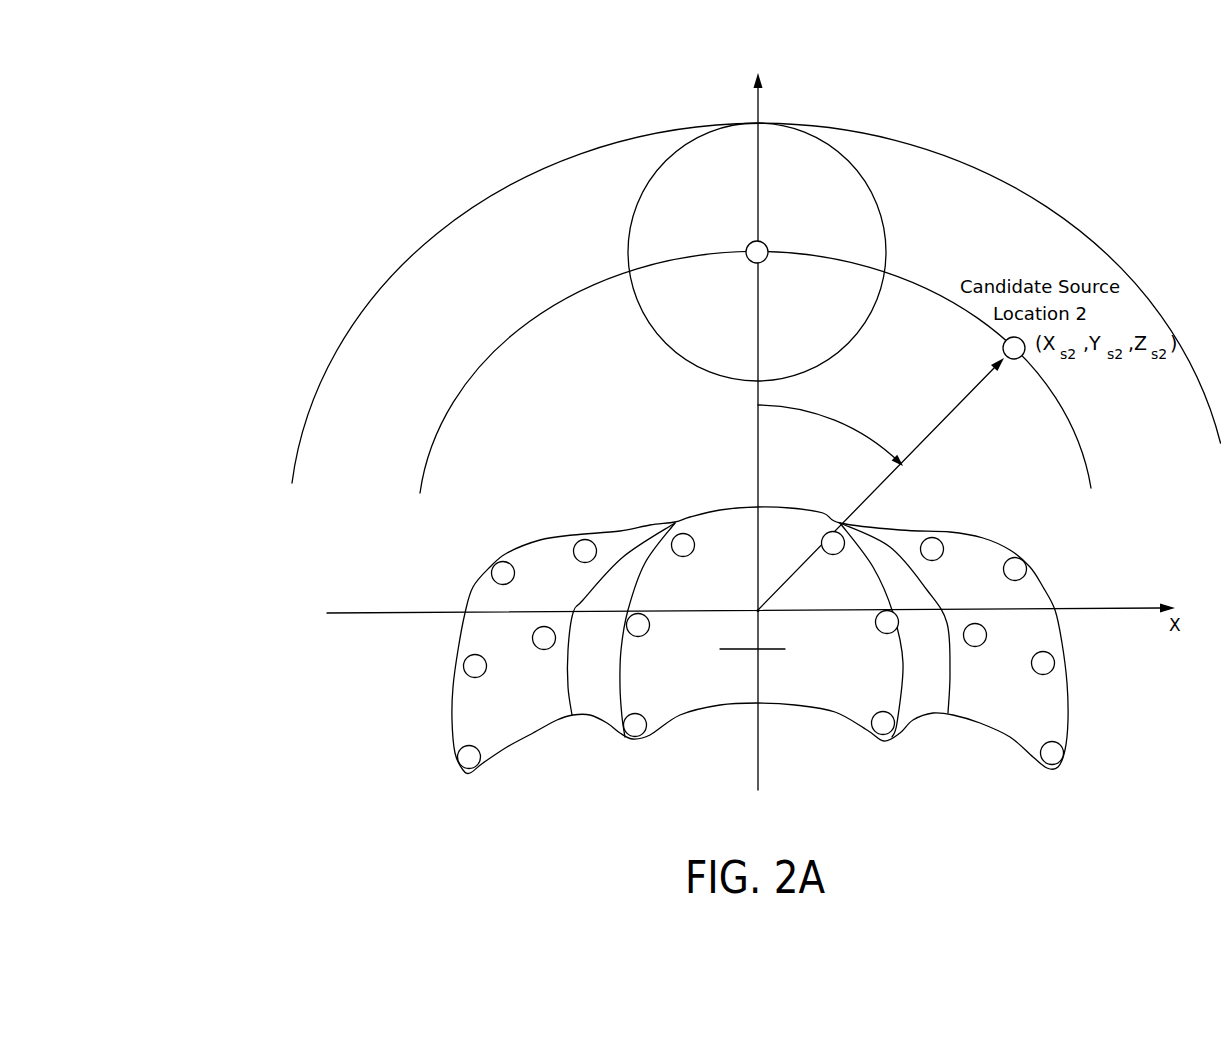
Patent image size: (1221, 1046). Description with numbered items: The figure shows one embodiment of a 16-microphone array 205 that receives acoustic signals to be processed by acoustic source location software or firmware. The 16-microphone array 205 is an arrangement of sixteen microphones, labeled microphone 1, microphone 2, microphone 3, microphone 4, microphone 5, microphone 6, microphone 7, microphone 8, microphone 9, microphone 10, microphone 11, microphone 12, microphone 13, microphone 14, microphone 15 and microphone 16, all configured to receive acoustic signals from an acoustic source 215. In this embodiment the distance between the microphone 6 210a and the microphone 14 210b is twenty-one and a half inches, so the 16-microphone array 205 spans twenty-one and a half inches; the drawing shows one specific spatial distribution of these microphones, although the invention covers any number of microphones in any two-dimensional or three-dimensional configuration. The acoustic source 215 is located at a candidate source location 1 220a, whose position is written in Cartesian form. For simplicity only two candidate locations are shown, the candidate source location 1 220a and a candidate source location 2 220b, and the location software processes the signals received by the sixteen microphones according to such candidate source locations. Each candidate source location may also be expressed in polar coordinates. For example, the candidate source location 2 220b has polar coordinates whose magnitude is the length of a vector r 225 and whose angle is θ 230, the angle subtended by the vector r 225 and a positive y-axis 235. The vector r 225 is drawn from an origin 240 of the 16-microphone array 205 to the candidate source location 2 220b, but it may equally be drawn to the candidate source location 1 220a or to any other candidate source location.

The 16-microphone array 205 is at (1037, 572).
The microphone 6 210a is at (1033, 660).
The microphone 14 210b is at (502, 641).
The acoustic source 215 is at (767, 250).
The candidate source location 1 220a is at (690, 297).
The candidate source location 2 220b is at (1143, 367).
The vector r 225 is at (973, 387).
The angle theta 230 is at (842, 397).
The positive y-axis 235 is at (760, 95).
The origin 240 is at (760, 612).
The microphone 1 is at (833, 543).
The microphone 2 is at (932, 549).
The microphone 3 is at (1015, 569).
The microphone 4 is at (887, 622).
The microphone 5 is at (975, 635).
The microphone 6 is at (1043, 663).
The microphone 7 is at (883, 723).
The microphone 8 is at (1052, 753).
The microphone 9 is at (683, 545).
The microphone 10 is at (581, 565).
The microphone 11 is at (513, 583).
The microphone 12 is at (647, 638).
The microphone 13 is at (544, 651).
The microphone 14 is at (482, 678).
The microphone 15 is at (645, 719).
The microphone 16 is at (477, 749).